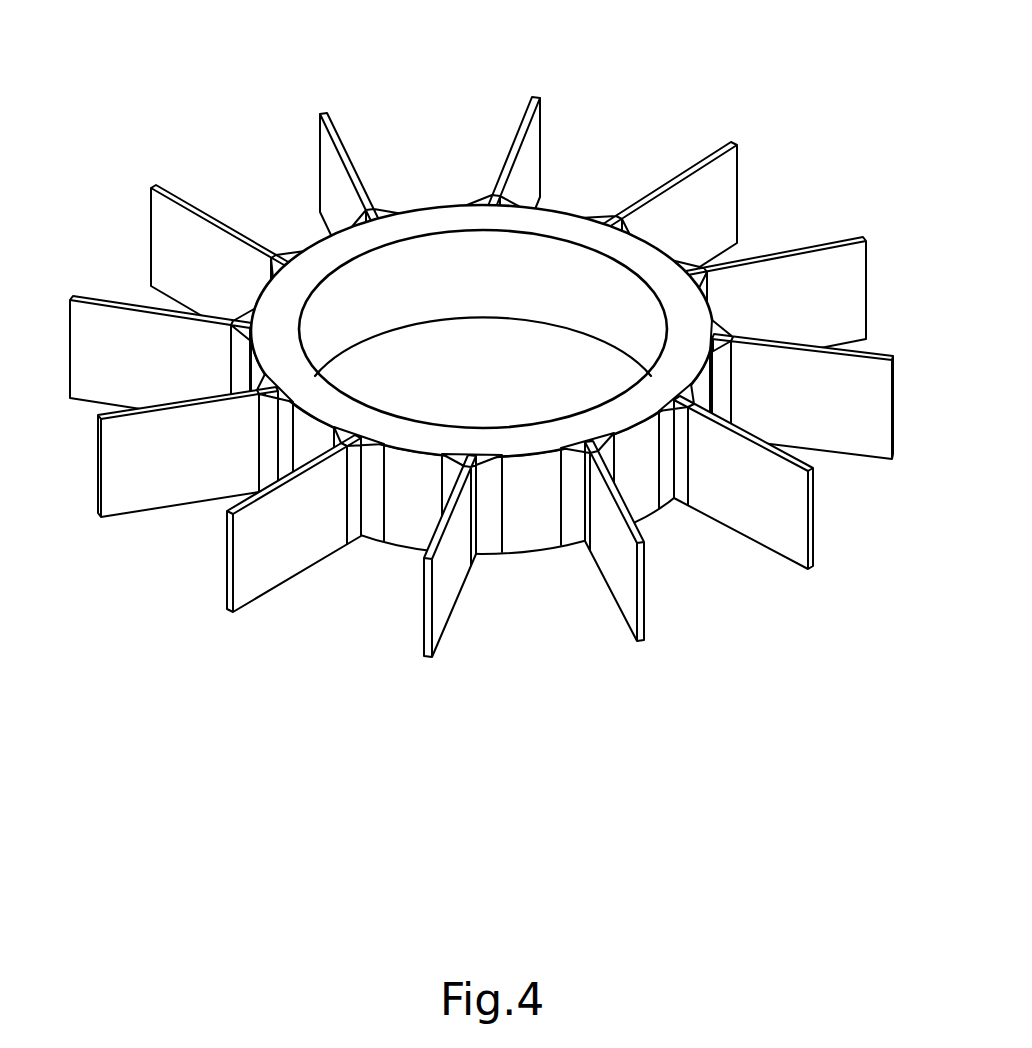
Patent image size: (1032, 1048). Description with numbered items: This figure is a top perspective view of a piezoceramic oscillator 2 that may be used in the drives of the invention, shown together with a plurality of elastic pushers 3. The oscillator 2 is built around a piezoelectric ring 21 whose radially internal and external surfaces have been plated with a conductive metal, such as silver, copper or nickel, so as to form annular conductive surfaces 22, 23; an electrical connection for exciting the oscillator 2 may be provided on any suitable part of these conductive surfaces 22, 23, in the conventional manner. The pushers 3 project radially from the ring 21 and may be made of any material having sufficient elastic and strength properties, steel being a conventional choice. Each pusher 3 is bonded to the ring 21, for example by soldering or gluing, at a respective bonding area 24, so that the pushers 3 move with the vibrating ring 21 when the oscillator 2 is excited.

The piezoelectric oscillator 2 is at (447, 113).
The piezoelectric ring 21 is at (567, 226).
The annular conductive surface 22 is at (640, 478).
The annular conductive surface 23 is at (405, 288).
The bonding area 24 is at (367, 495).
The pusher 3 is at (158, 465).